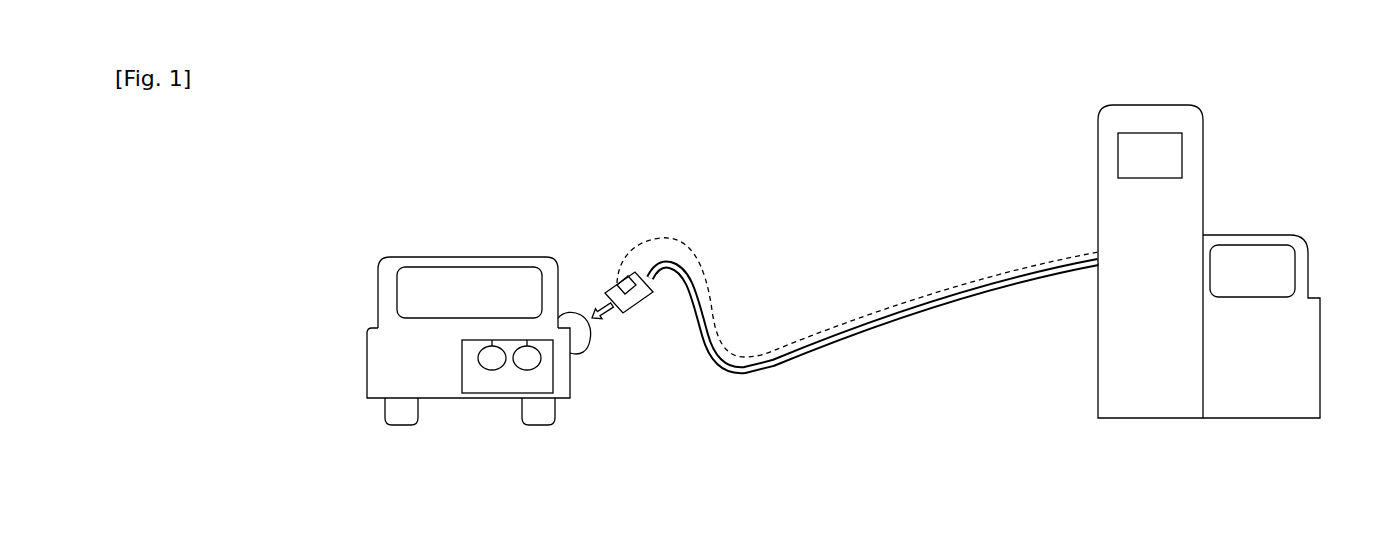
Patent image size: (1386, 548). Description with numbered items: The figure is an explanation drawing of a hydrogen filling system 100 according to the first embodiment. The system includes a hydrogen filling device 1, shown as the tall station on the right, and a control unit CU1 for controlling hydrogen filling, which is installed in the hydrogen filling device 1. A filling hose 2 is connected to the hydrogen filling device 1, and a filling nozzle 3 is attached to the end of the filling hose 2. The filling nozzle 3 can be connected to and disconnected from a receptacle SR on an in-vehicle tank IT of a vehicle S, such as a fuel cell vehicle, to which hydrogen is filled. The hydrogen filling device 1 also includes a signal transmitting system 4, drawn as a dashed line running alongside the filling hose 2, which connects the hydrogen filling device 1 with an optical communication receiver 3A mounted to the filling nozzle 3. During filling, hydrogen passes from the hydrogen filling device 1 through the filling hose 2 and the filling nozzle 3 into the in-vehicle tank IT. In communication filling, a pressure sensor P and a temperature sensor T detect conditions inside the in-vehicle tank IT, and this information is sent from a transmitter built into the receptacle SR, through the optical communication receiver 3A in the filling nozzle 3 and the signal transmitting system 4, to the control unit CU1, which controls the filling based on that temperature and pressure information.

The hydrogen filling system 100 is at (960, 98).
The hydrogen filling device 1 is at (1173, 105).
The control unit CU1 is at (1140, 133).
The filling hose 2 is at (907, 320).
The signal transmitting system 4 is at (893, 297).
The filling nozzle 3 is at (627, 315).
The optical communication receiver 3A is at (606, 288).
The vehicle S is at (418, 257).
The receptacle SR is at (584, 355).
The in-vehicle tank IT is at (462, 376).
The temperature sensor T is at (486, 371).
The pressure sensor P is at (522, 371).